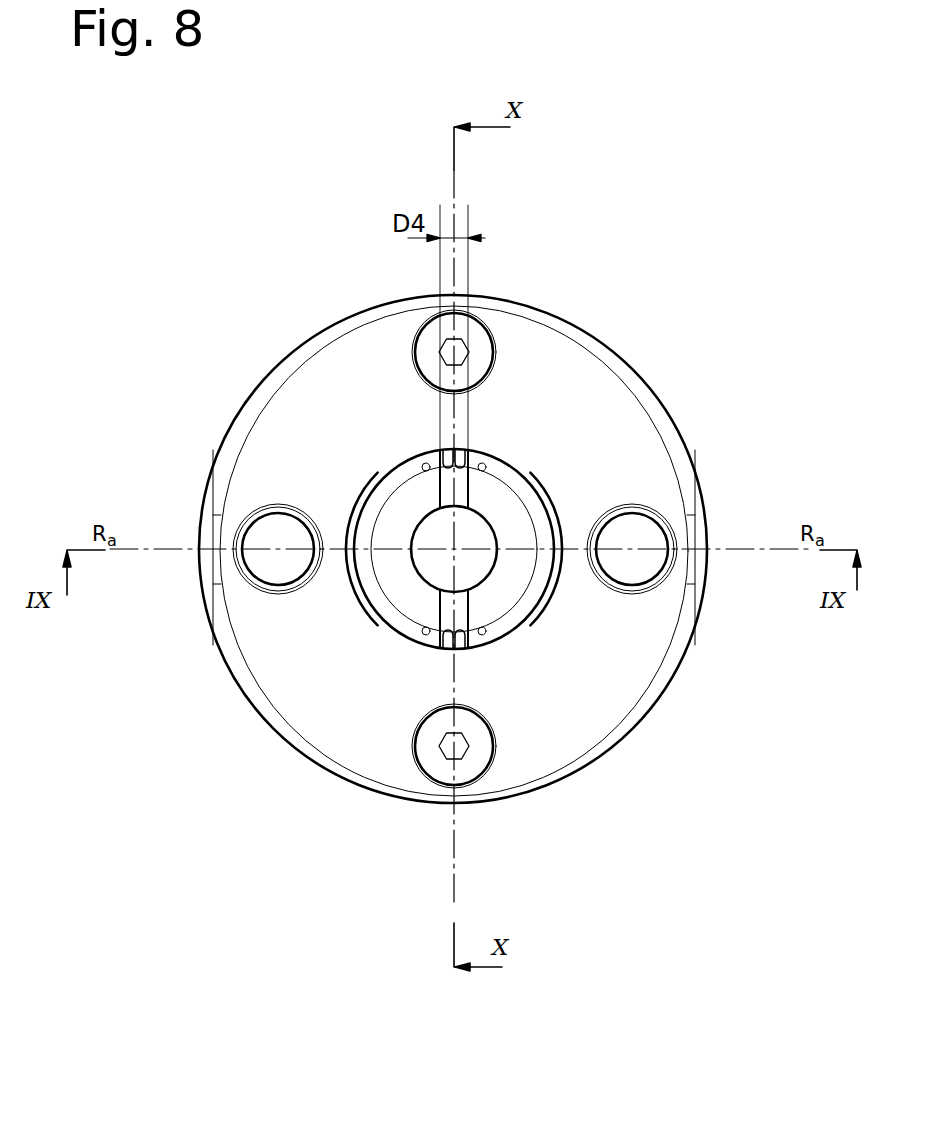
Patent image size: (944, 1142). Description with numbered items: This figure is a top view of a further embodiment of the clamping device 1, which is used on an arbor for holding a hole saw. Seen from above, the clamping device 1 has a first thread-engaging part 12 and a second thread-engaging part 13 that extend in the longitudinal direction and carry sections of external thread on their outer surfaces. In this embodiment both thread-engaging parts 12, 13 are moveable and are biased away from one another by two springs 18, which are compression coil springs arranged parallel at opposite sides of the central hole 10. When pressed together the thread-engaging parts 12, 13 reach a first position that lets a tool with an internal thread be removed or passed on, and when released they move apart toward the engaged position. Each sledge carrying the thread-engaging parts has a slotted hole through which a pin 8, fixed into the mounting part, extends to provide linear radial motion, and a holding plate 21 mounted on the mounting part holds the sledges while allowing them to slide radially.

The clamping device 1 is at (522, 549).
The pin 8 is at (632, 537).
The hole 10 is at (440, 527).
The first thread-engaging part 12 is at (438, 469).
The second thread-engaging part 13 is at (523, 487).
The springs 18 is at (487, 463).
The holding plate 21 is at (607, 688).